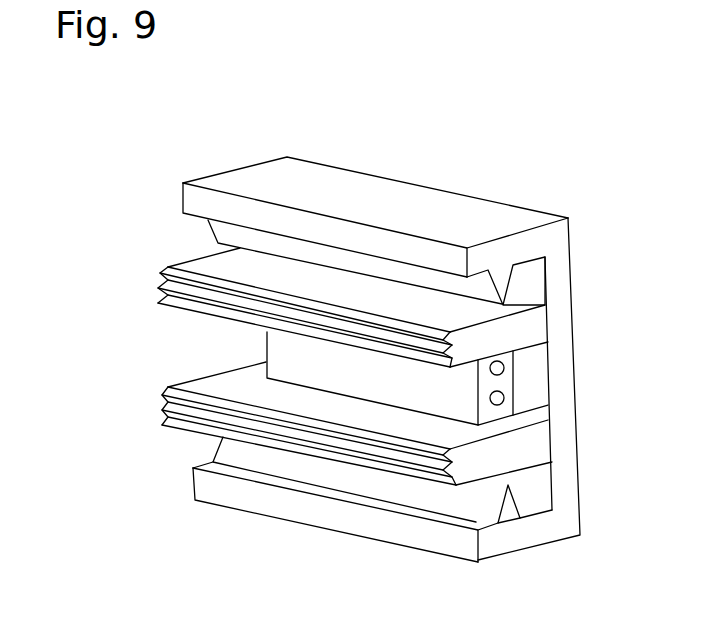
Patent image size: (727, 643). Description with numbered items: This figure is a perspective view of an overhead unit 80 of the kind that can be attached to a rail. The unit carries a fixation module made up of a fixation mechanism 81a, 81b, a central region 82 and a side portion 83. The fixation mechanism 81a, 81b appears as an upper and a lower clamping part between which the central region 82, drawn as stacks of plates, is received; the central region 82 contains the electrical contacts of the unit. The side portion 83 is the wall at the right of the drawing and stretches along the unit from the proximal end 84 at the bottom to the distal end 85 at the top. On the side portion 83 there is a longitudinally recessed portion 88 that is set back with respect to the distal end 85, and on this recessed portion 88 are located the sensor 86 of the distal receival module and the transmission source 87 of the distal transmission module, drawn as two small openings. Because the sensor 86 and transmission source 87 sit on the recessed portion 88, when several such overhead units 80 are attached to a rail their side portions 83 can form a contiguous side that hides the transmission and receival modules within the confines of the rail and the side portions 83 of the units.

The overhead unit 80 is at (411, 379).
The fixation mechanism 81a is at (428, 279).
The fixation mechanism 81b is at (367, 516).
The central region 82 is at (148, 262).
The side portion 83 is at (555, 417).
The proximal end 84 is at (195, 505).
The distal end 85 is at (580, 539).
The sensor 86 is at (500, 403).
The transmission source 87 is at (500, 368).
The longitudinally recessed portion 88 is at (558, 382).